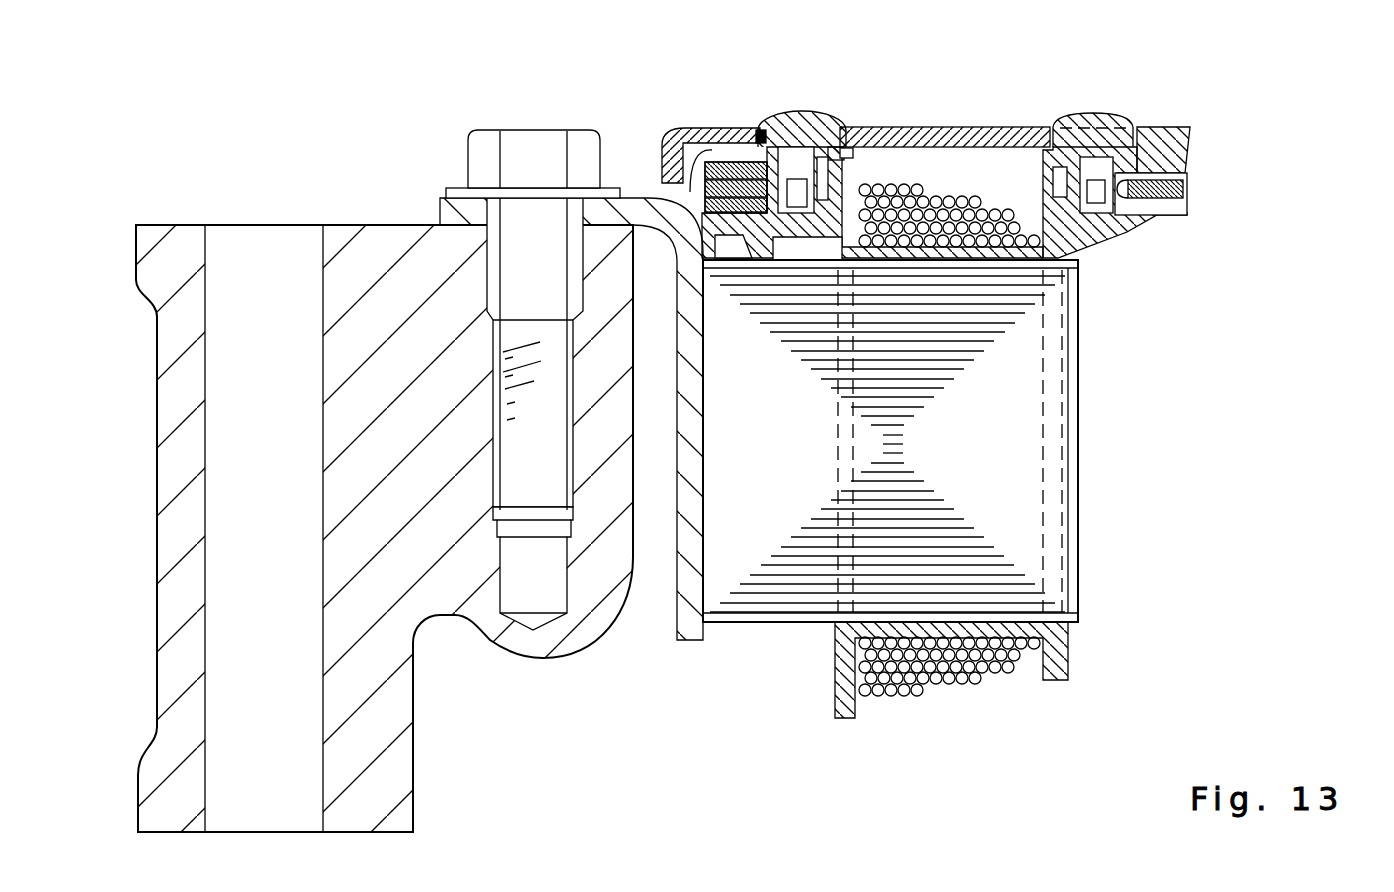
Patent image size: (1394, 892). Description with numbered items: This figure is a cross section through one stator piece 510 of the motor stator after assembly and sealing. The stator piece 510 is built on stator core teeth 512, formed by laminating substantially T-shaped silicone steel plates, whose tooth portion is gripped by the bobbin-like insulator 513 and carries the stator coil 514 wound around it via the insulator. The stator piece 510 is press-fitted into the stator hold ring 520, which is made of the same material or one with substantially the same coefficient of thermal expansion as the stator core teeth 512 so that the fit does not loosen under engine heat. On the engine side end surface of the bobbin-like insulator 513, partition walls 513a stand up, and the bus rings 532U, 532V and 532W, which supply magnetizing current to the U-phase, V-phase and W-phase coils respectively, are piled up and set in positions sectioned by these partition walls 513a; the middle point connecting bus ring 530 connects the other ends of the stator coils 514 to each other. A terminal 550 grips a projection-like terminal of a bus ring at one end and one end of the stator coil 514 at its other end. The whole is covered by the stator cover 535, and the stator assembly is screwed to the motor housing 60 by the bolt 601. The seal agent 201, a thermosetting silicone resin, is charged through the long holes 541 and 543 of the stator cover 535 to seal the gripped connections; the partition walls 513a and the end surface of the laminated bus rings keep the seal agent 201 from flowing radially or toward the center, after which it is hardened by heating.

The motor housing 60 is at (373, 238).
The bolt 601 is at (518, 146).
The seal agent 201 is at (812, 120).
The stator piece 510 is at (949, 379).
The stator core teeth 512 is at (760, 616).
The bobbin-like insulator 513 is at (1088, 232).
The partition wall 513a is at (762, 130).
The stator coil 514 is at (910, 692).
The stator hold ring 520 is at (687, 607).
The middle point connecting bus ring 530 is at (1187, 194).
The bus ring 532U is at (745, 170).
The bus ring 532V is at (718, 188).
The bus ring 532W is at (705, 205).
The stator cover 535 is at (978, 128).
The long hole 541 is at (847, 133).
The long hole 543 is at (1150, 128).
The terminal 550 is at (795, 182).